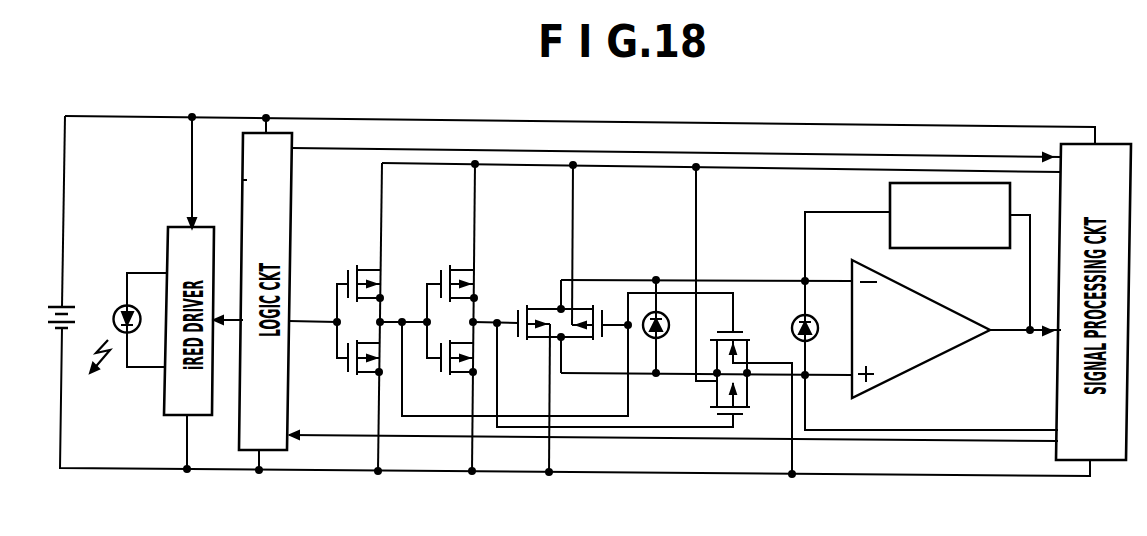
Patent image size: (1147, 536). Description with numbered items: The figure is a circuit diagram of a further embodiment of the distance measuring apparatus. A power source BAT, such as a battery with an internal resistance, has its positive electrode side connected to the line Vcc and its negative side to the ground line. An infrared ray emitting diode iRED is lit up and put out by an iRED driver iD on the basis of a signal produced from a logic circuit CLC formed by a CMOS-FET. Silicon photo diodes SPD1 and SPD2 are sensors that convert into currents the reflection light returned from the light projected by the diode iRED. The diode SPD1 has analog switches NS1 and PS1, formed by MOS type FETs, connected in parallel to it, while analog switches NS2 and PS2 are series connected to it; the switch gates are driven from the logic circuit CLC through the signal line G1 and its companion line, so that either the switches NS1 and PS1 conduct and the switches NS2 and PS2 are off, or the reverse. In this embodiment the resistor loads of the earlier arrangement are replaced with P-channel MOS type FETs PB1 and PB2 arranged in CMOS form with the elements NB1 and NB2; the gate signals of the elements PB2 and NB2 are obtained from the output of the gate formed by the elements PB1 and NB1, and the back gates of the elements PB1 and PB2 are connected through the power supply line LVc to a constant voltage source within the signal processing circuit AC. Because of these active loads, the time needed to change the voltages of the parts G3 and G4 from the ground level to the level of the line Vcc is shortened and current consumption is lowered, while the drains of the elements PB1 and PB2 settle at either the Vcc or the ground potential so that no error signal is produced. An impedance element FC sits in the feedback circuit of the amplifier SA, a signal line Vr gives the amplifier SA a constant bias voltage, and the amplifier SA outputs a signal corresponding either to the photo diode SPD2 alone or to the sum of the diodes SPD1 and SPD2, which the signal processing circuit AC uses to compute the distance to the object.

The power supply line Vcc is at (337, 117).
The logic circuit CLC is at (243, 186).
The iRED driver iD is at (181, 227).
The power source BAT is at (77, 314).
The infrared ray emitting diode iRED is at (126, 333).
The signal line G1 is at (291, 320).
The P-channel MOS type FET PB1 is at (356, 266).
The N-channel MOS type FET NB1 is at (353, 376).
The circuit part G3 is at (556, 354).
The P-channel MOS type FET PB2 is at (449, 266).
The N-channel MOS type FET NB2 is at (447, 377).
The circuit part G4 is at (603, 359).
The power supply line LVc is at (742, 169).
The analog switch NS1 is at (516, 306).
The analog switch PS1 is at (602, 339).
The silicon photo diode SPD1 is at (651, 312).
The analog switch NS2 is at (744, 331).
The analog switch PS2 is at (708, 413).
The silicon photo diode SPD2 is at (800, 316).
The impedance element FC is at (985, 249).
The amplifier SA is at (960, 348).
The signal line Vr is at (945, 431).
The signal processing circuit AC is at (1108, 143).